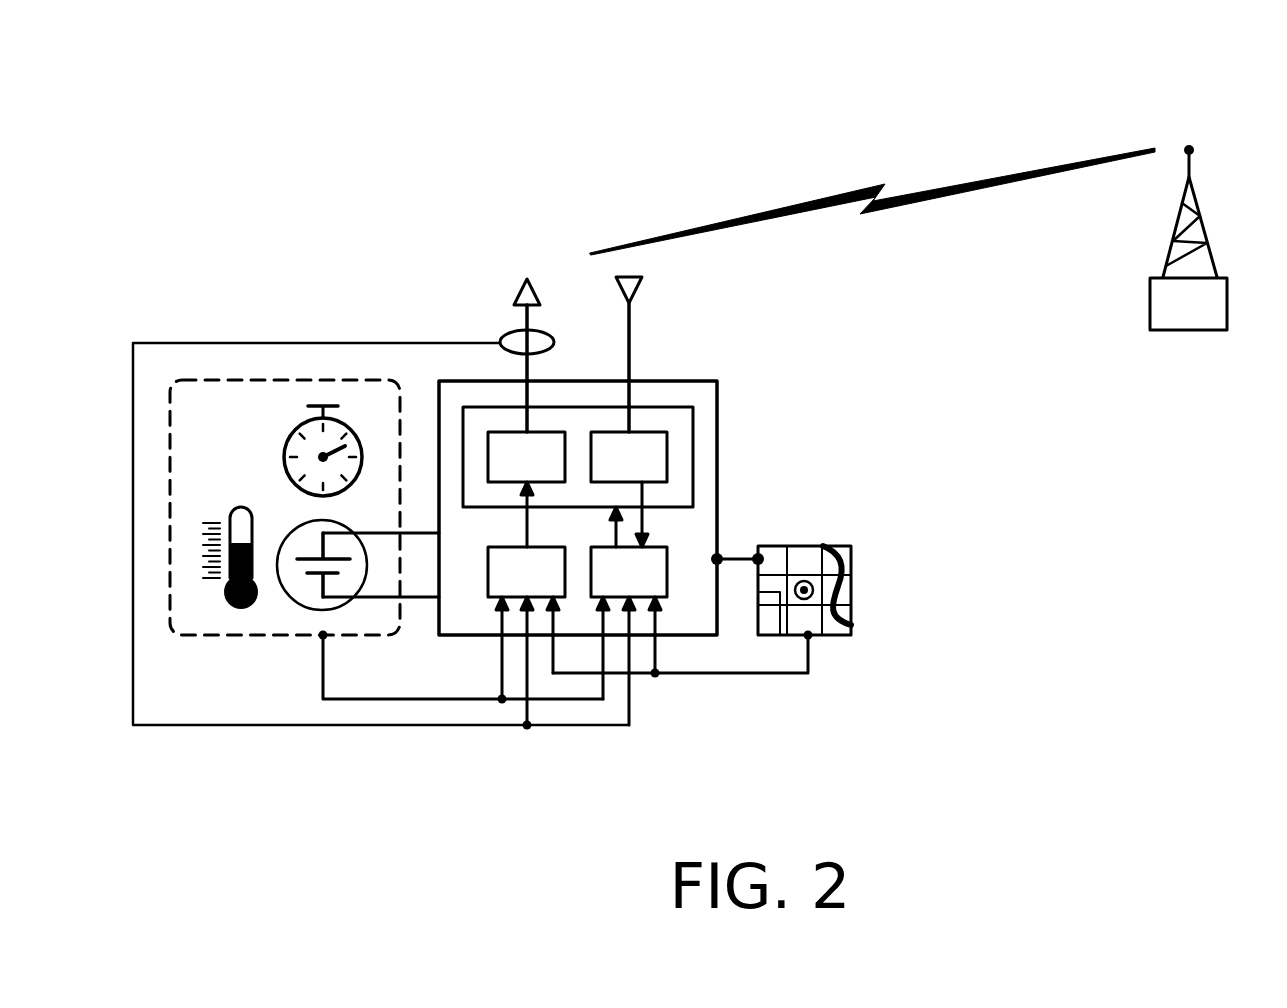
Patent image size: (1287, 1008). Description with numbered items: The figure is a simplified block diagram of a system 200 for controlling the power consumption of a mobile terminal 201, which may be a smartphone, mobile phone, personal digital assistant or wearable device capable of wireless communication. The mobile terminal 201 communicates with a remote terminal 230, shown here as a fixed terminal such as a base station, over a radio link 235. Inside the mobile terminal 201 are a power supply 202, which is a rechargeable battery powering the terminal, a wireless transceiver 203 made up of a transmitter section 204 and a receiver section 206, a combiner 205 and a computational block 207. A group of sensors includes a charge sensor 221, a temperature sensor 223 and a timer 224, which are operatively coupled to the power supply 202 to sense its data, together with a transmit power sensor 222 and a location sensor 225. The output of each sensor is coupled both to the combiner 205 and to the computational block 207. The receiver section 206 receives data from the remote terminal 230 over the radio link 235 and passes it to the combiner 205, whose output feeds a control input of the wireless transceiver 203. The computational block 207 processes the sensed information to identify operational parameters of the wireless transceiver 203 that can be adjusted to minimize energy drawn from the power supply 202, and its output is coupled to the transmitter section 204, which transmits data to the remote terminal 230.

The system 200 is at (757, 68).
The mobile terminal 201 is at (706, 393).
The power supply 202 is at (297, 559).
The wireless transceiver 203 is at (680, 420).
The transmitter section 204 is at (502, 445).
The combiner 205 is at (657, 585).
The receiver section 206 is at (654, 457).
The computational block 207 is at (502, 585).
The charge sensor 221 is at (358, 659).
The transmit power sensor 222 is at (551, 342).
The temperature sensor 223 is at (223, 598).
The timer 224 is at (353, 435).
The location sensor 225 is at (802, 546).
The remote terminal 230 is at (1214, 292).
The radio link 235 is at (825, 208).